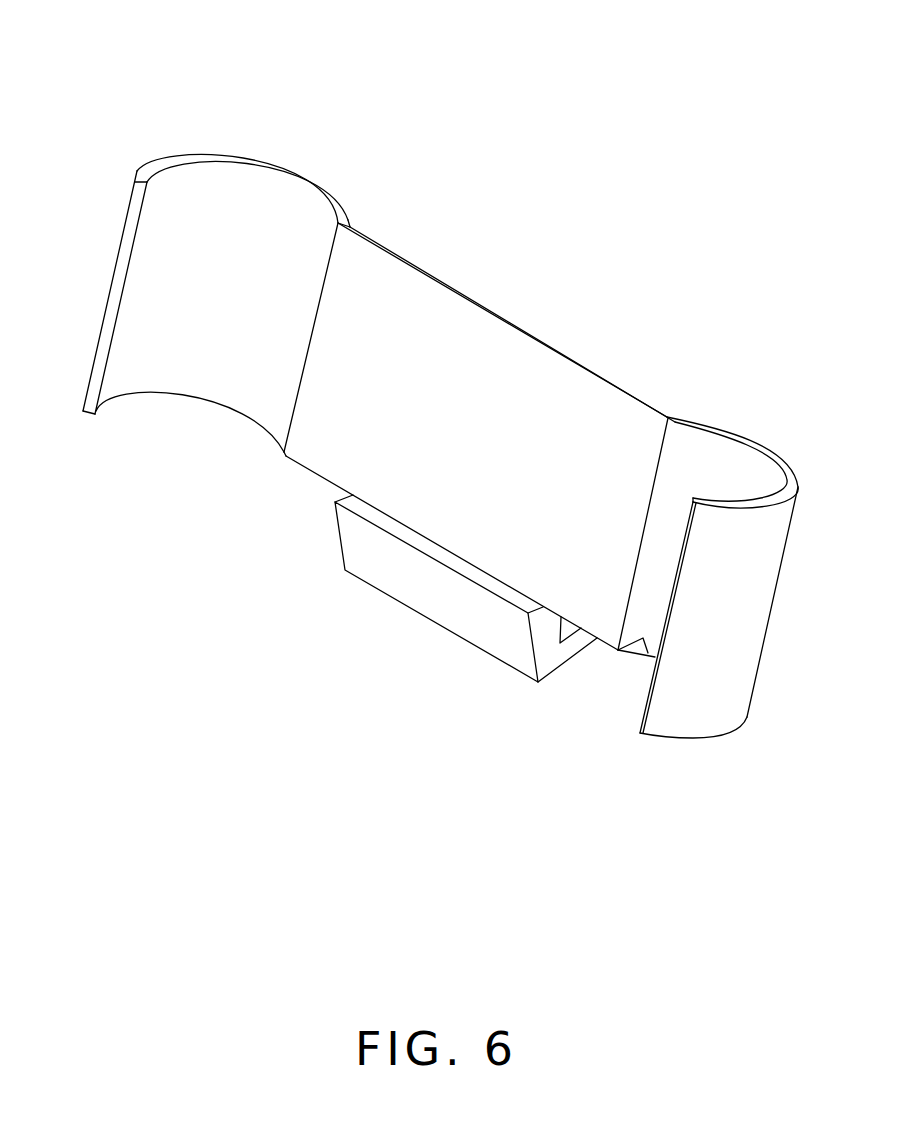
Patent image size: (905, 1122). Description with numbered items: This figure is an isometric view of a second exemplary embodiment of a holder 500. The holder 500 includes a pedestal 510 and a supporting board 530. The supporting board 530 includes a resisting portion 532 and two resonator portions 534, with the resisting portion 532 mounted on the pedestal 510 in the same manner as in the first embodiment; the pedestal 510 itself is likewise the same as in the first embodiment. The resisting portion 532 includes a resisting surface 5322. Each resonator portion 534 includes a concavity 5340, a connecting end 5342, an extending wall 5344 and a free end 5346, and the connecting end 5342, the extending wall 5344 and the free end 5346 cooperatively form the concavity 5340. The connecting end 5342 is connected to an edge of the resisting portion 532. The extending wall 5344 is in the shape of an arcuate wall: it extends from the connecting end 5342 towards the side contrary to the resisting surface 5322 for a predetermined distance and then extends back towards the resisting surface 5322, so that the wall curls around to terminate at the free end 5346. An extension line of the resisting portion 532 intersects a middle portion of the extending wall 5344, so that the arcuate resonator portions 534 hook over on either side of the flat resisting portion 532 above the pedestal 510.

The holder 500 is at (466, 52).
The pedestal 510 is at (465, 613).
The supporting board 530 is at (828, 341).
The resisting portion 532 is at (657, 402).
The resonator portion 534 is at (765, 445).
The resisting surface 5322 is at (513, 365).
The concavity 5340 is at (270, 236).
The connecting end 5342 is at (347, 222).
The extending wall 5344 is at (238, 192).
The free end 5346 is at (132, 207).